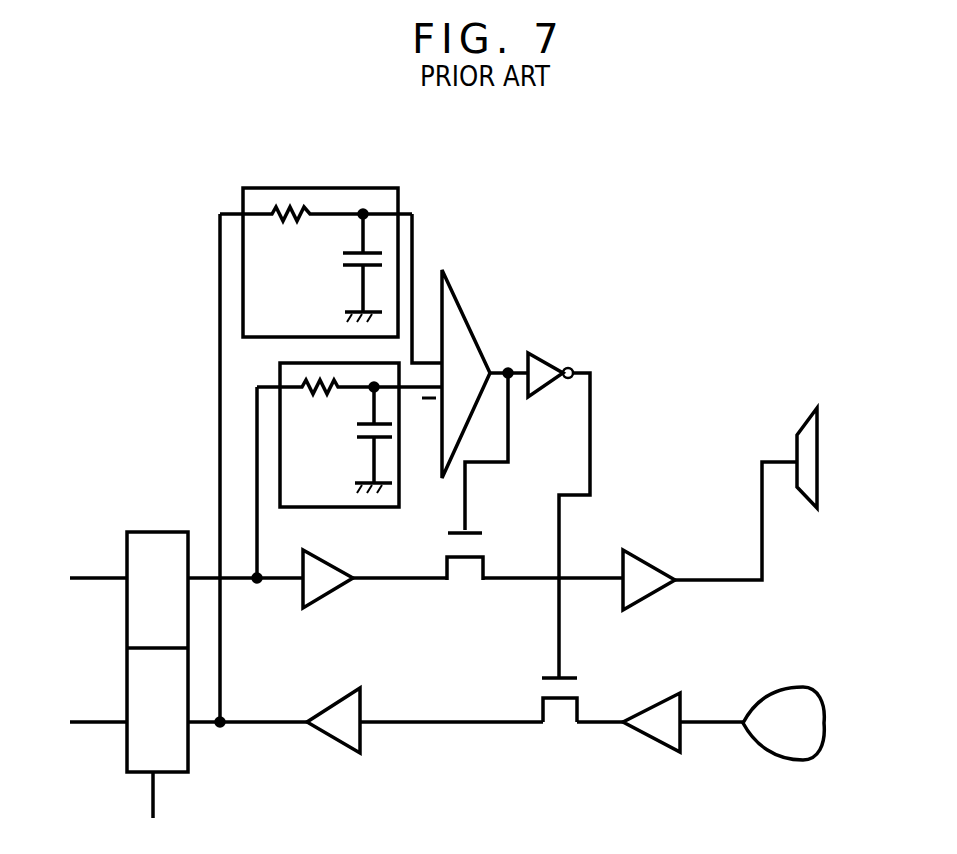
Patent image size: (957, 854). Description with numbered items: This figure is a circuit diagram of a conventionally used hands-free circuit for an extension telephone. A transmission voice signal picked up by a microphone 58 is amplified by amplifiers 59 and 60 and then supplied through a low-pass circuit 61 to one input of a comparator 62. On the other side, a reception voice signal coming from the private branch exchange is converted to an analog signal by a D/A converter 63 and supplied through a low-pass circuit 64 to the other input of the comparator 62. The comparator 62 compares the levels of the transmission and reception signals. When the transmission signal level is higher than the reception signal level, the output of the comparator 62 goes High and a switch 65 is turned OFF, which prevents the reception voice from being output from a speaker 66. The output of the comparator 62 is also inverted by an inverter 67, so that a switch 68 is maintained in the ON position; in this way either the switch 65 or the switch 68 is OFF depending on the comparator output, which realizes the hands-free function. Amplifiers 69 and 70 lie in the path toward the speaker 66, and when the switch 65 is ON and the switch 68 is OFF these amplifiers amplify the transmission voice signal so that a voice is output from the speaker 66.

The microphone 58 is at (763, 690).
The amplifier 59 is at (663, 694).
The amplifier 60 is at (362, 745).
The low-pass circuit 61 is at (400, 198).
The comparator 62 is at (460, 307).
The D/A converter 63 is at (157, 530).
The low-pass circuit 64 is at (280, 375).
The switch 65 is at (458, 545).
The speaker 66 is at (797, 440).
The inverter 67 is at (548, 354).
The switch 68 is at (545, 688).
The amplifier 69 is at (330, 598).
The amplifier 70 is at (640, 555).